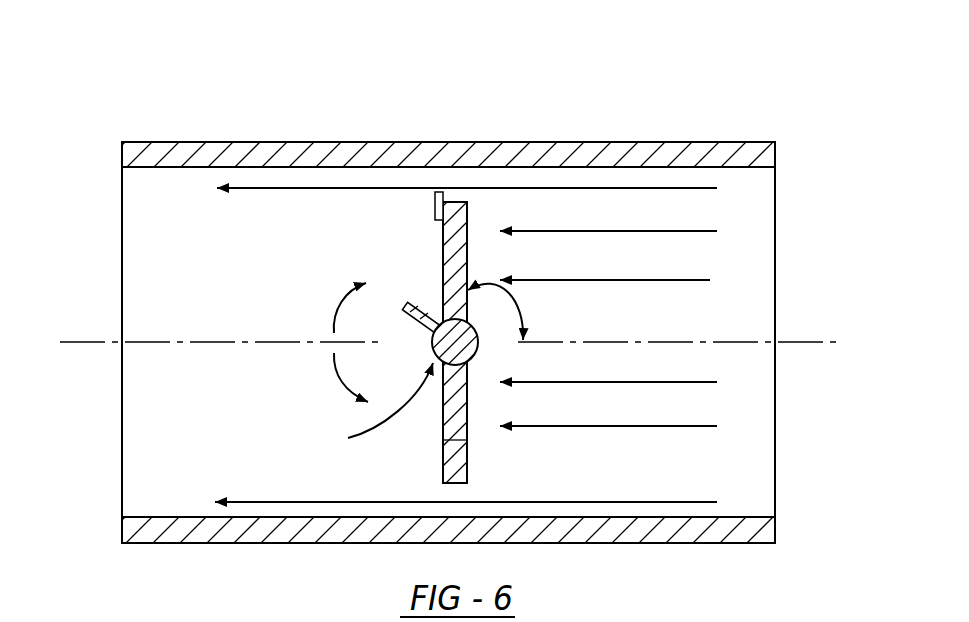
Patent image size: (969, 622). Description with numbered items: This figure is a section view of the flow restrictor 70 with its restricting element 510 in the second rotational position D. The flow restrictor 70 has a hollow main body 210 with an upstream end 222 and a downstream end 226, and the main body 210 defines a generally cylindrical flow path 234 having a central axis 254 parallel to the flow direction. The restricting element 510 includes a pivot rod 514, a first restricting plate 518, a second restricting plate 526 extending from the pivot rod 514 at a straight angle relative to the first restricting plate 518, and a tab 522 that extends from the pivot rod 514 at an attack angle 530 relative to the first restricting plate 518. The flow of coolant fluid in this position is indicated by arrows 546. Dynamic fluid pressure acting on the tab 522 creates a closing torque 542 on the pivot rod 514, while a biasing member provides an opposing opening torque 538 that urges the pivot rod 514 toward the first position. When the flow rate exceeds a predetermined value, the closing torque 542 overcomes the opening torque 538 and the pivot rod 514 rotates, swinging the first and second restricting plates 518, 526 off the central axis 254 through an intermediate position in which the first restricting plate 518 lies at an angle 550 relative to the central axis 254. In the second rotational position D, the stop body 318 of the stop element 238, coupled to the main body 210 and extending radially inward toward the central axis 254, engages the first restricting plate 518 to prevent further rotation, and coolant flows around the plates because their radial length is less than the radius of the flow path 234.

The flow restrictor 70 is at (153, 92).
The main body 210 is at (264, 142).
The downstream end 226 is at (122, 157).
The upstream end 222 is at (777, 152).
The flow path 234 is at (740, 517).
The central axis 254 is at (815, 343).
The stop body 318 is at (433, 210).
The stop element 238 is at (443, 205).
The first restricting plate 518 is at (468, 215).
The attack angle 530 is at (437, 288).
The tab 522 is at (412, 302).
The pivot rod 514 is at (478, 350).
The angle 550 is at (517, 303).
The opening torque 538 is at (335, 305).
The closing torque 542 is at (335, 375).
The restricting element 510 is at (371, 408).
The second restricting plate 526 is at (443, 455).
The second rotational position D is at (458, 468).
The arrows indicating flow of coolant fluid 546 is at (283, 503).